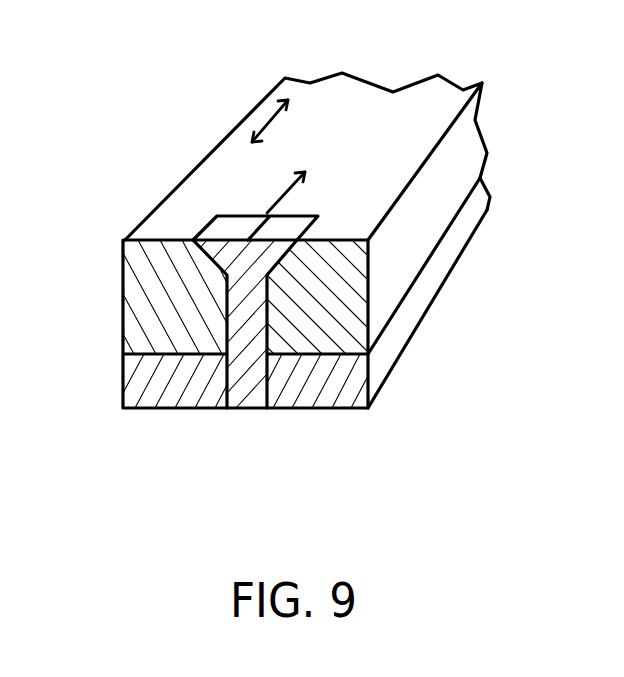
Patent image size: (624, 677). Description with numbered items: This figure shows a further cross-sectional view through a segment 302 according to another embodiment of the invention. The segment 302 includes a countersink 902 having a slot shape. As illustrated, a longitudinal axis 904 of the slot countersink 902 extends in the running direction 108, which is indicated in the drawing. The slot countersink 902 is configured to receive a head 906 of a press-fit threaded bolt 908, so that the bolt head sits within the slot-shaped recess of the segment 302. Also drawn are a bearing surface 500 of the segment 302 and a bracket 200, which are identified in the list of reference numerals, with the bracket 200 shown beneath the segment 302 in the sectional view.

The running direction 108 is at (258, 113).
The longitudinal axis 904 is at (267, 192).
The head 906 is at (222, 250).
The countersink 902 is at (223, 247).
The bearing surface 500 is at (357, 197).
The segment 302 is at (348, 300).
The press-fit threaded bolt 908 is at (248, 390).
The bracket 200 is at (323, 398).